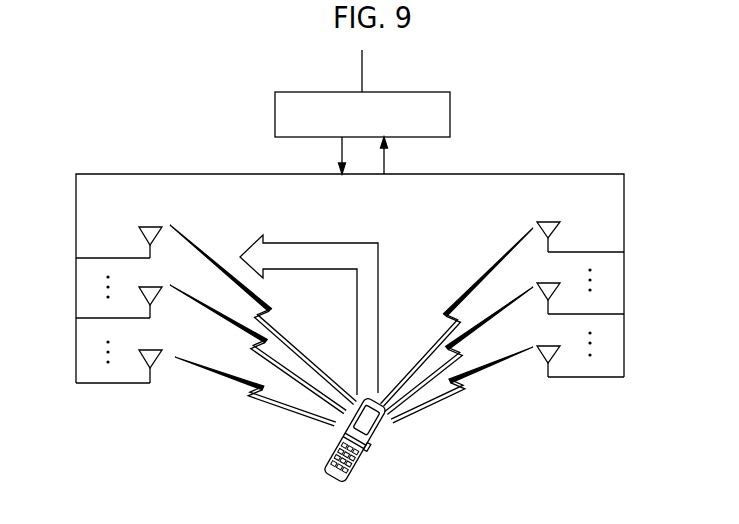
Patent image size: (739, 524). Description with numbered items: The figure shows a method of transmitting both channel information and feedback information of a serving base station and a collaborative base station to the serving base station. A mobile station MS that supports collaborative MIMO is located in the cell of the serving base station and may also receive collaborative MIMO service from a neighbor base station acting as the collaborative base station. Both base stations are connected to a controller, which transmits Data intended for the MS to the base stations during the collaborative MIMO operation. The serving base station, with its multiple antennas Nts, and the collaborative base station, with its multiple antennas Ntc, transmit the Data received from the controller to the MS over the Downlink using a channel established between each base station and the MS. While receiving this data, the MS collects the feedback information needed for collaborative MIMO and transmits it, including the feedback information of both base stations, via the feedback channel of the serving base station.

The data Data is at (387, 71).
The element controller is at (362, 133).
The number of antennas of the serving base station Nts is at (149, 398).
The number of antennas of the collaborative base station Ntc is at (553, 393).
The downlink Downlink is at (479, 415).
The mobile station MS is at (363, 454).